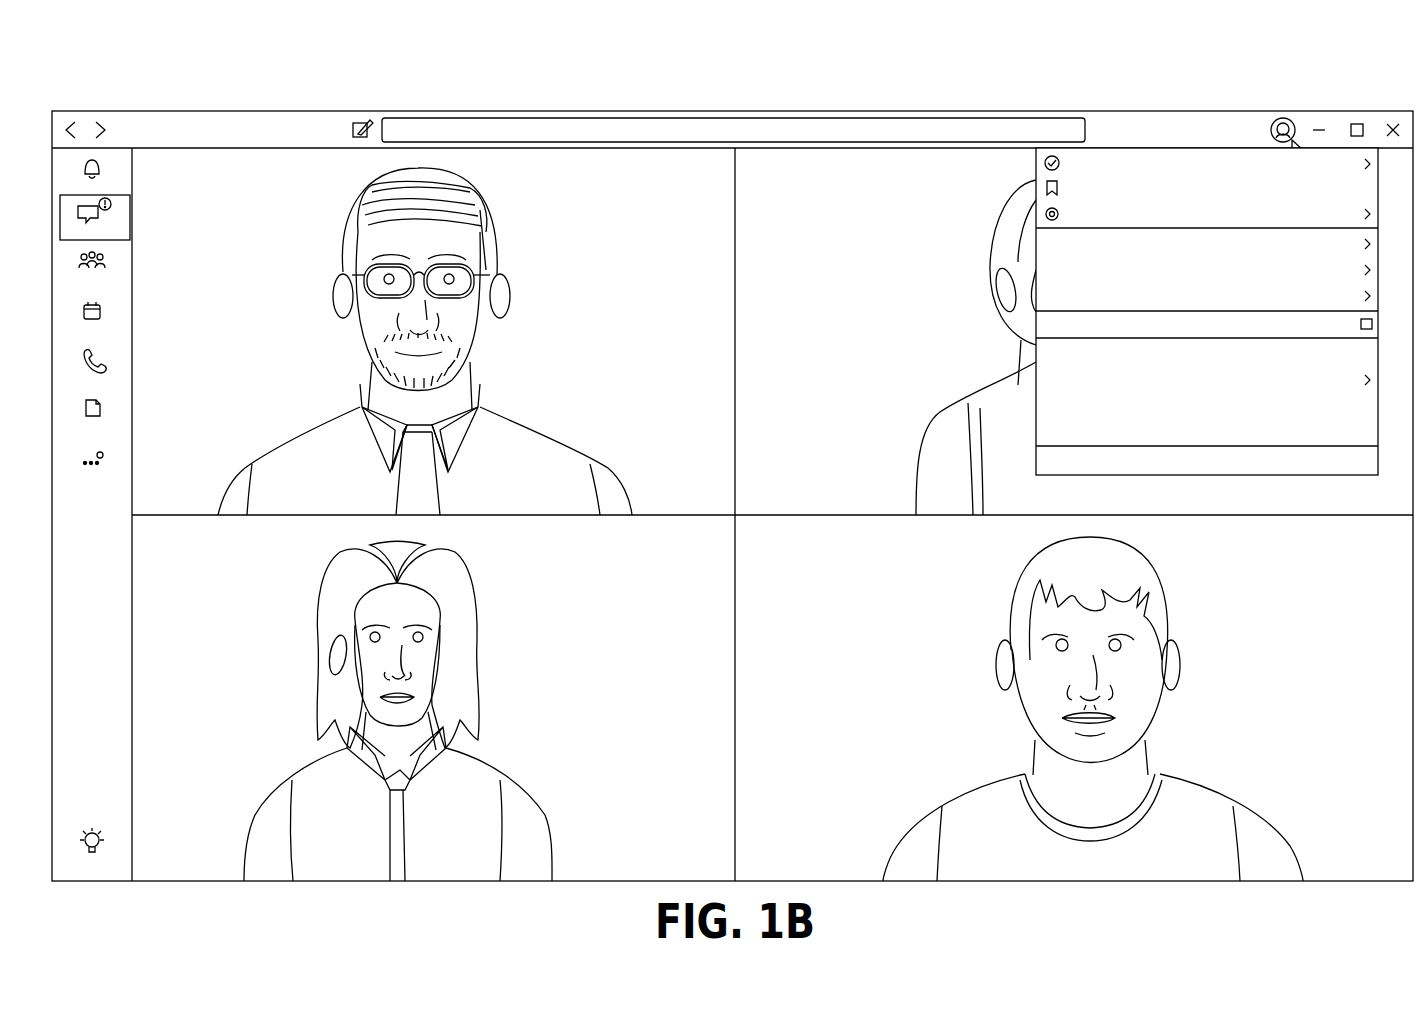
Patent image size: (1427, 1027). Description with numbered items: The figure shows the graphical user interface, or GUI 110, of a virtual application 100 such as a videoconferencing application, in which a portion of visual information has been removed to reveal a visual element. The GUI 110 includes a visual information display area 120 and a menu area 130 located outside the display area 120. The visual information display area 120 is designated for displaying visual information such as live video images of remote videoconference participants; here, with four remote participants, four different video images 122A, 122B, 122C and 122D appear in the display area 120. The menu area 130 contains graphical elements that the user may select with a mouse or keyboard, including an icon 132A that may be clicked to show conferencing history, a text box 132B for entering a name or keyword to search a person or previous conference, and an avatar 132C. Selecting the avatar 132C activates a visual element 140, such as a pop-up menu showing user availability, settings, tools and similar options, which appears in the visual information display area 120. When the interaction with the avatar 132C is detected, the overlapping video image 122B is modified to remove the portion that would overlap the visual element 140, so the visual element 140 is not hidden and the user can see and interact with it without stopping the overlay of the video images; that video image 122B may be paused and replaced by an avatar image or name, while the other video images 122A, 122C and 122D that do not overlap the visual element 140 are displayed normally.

The virtual application 100 is at (143, 96).
The GUI 110 is at (792, 118).
The visual information display area 120 is at (242, 185).
The video image 122A is at (292, 185).
The video image 122B is at (950, 213).
The video image 122C is at (597, 847).
The video image 122D is at (1350, 847).
The menu area 130 is at (1140, 125).
The icon 132A is at (110, 216).
The text box 132B is at (522, 125).
The avatar 132C is at (1272, 118).
The visual element 140 is at (1330, 170).